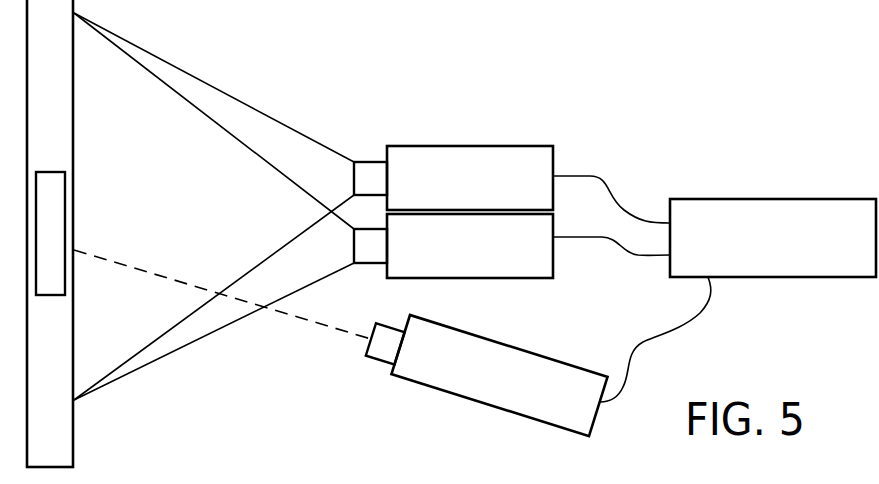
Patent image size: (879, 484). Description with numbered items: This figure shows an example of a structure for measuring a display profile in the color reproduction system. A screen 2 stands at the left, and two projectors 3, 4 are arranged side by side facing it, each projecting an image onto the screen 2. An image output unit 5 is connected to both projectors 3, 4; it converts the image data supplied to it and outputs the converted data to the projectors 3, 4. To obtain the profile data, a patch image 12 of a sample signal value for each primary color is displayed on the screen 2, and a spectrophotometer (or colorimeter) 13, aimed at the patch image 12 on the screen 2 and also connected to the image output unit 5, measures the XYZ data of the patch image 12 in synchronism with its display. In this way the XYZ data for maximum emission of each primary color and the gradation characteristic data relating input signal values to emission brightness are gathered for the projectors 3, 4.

The screen 2 is at (73, 93).
The patch image 12 is at (65, 192).
The projector 3 is at (455, 146).
The projector 4 is at (522, 280).
The image output unit 5 is at (752, 199).
The spectrophotometer 13 is at (432, 392).